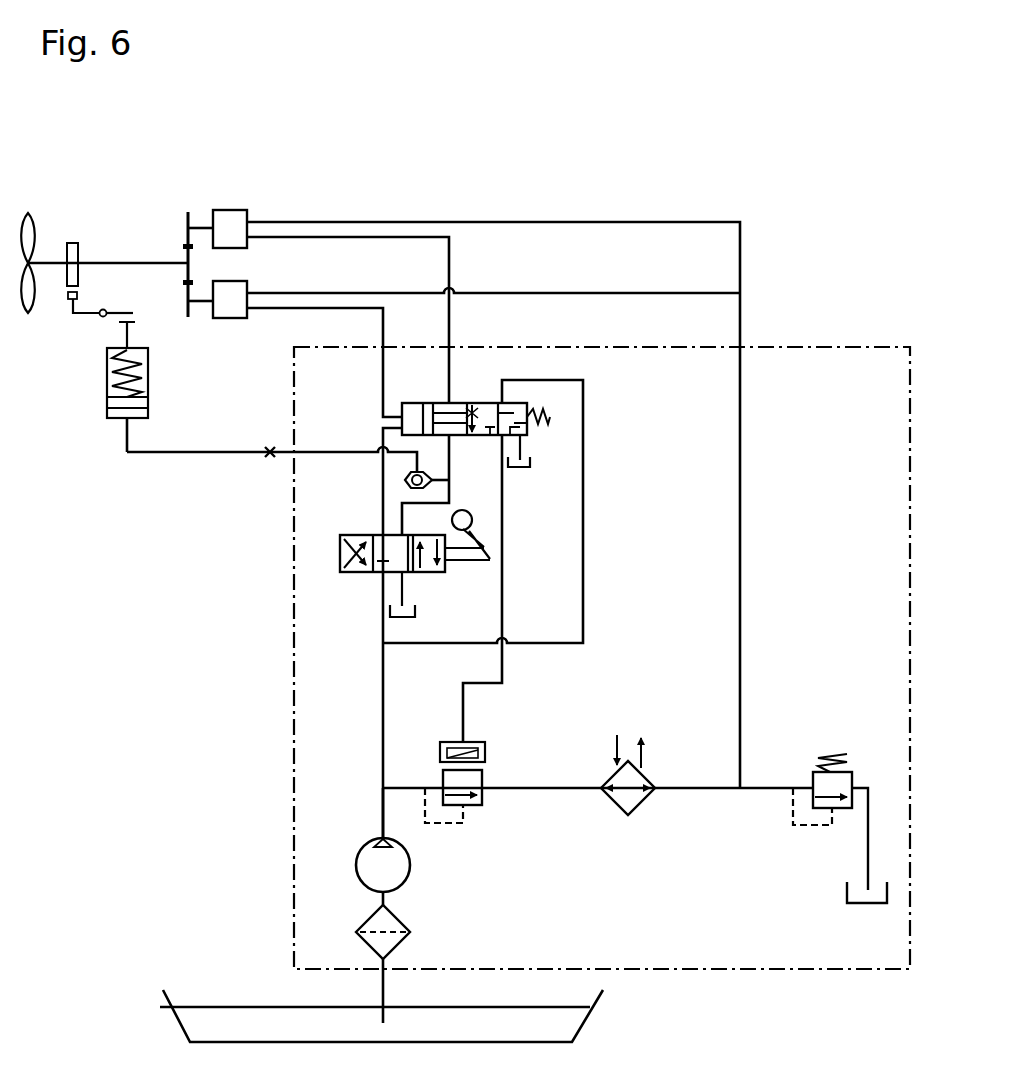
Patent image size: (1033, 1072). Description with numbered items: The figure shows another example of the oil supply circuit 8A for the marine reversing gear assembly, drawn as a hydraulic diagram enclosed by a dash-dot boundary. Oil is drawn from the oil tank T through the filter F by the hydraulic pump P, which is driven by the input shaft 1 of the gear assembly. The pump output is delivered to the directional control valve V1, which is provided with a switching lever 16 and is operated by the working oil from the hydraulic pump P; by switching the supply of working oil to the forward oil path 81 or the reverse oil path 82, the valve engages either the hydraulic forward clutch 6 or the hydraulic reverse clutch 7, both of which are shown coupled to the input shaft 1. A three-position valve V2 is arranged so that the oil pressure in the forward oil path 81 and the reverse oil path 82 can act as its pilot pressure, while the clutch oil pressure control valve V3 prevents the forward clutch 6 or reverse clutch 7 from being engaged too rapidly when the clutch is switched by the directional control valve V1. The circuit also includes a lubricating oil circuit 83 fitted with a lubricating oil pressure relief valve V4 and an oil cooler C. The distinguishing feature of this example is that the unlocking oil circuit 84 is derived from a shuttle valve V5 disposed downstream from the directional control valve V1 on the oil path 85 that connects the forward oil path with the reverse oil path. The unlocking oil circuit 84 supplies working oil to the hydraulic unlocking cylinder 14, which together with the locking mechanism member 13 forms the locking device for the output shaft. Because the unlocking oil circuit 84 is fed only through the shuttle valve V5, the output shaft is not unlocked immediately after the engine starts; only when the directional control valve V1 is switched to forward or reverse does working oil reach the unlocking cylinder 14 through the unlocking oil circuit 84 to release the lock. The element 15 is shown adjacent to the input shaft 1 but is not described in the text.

The input shaft 1 is at (128, 262).
The hydraulic forward clutch 6 is at (228, 220).
The hydraulic reverse clutch 7 is at (228, 310).
The locking mechanism member 13 is at (88, 314).
The hydraulic unlocking cylinder 14 is at (107, 377).
The clutch 15 is at (72, 243).
The switching lever 16 is at (470, 511).
The forward oil path 81 is at (355, 237).
The reverse oil path 82 is at (287, 308).
The lubricating oil circuit 83 is at (575, 222).
The unlocking oil circuit 84 is at (287, 456).
The oil path 85 is at (405, 479).
The oil supply circuit 8A is at (702, 182).
The directional control valve V1 is at (363, 576).
The 3-position valve V2 is at (472, 404).
The clutch oil pressure control valve V3 is at (485, 808).
The lubricating oil pressure relief valve V4 is at (813, 772).
The shuttle valve V5 is at (412, 490).
The oil cooler C is at (647, 793).
The hydraulic pump P is at (412, 873).
The filter F is at (410, 933).
The oil tank T is at (590, 1017).